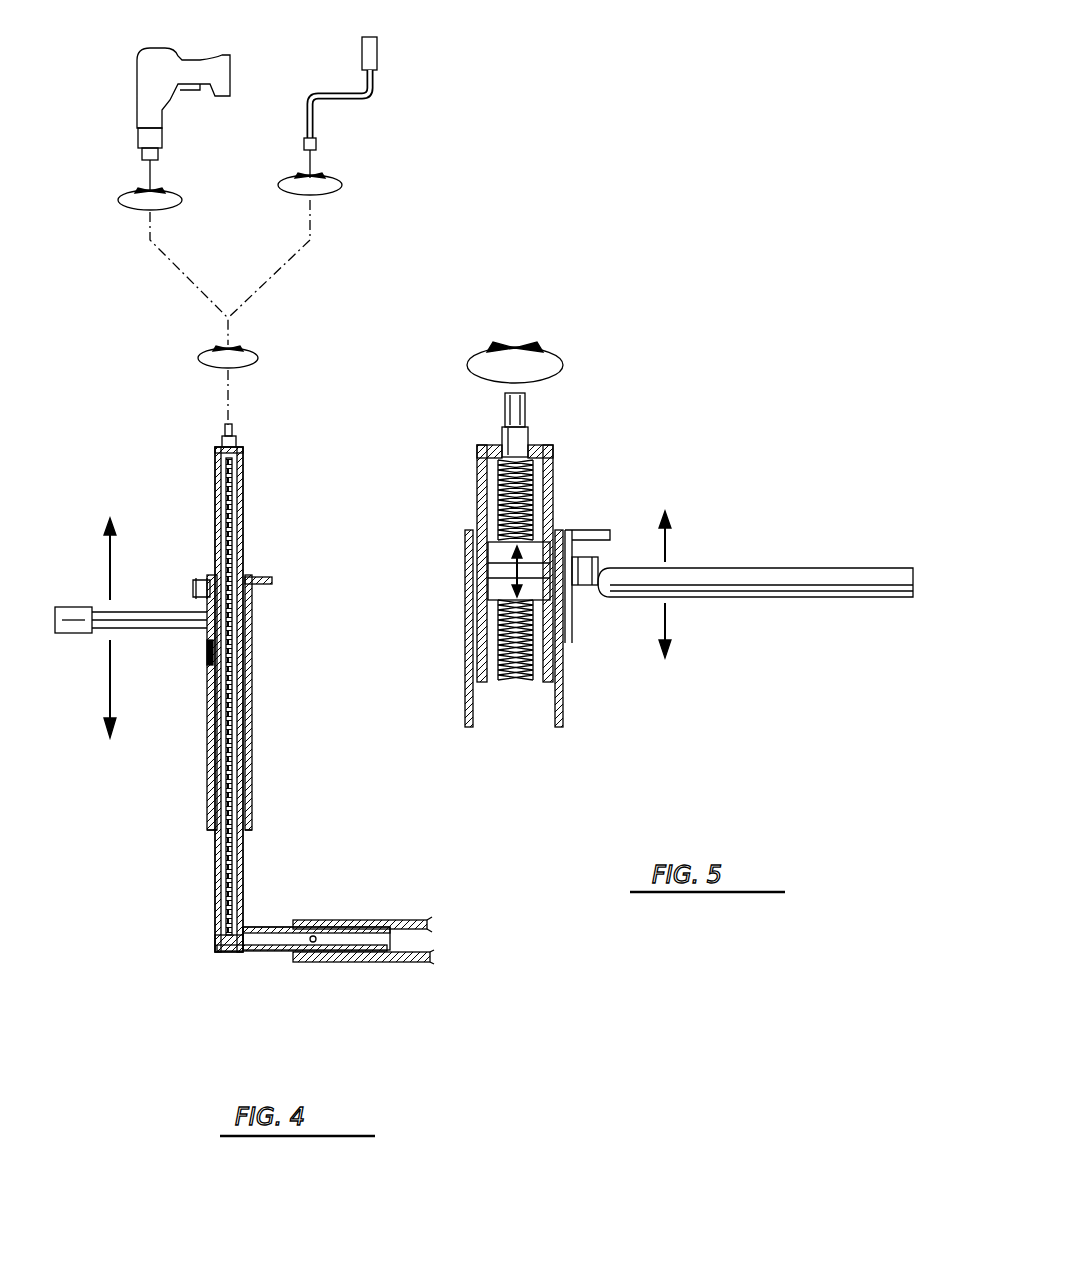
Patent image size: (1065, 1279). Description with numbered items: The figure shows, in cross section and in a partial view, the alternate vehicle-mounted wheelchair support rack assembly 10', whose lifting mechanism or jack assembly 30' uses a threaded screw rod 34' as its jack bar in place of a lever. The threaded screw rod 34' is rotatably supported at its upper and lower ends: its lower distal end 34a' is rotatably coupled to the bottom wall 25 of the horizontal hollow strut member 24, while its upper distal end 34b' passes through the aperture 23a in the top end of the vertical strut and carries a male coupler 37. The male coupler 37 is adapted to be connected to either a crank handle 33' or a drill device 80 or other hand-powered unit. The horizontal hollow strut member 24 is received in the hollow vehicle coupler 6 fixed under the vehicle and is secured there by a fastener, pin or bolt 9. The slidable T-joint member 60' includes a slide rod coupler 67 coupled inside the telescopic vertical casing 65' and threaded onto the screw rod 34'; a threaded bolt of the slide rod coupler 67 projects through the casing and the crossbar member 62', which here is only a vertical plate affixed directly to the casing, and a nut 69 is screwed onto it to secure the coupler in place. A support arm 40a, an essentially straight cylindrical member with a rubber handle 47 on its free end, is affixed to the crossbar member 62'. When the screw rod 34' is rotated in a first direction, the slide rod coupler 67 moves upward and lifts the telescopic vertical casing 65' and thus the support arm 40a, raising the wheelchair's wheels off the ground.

In FIG. 4, the drill device 80 is at (160, 55).
In FIG. 4, the crank handle 33' is at (385, 115).
In FIG. 4, the vehicle-mounted wheelchair support rack assembly 10' is at (193, 368).
In FIG. 4, the male coupler 37 is at (233, 425).
In FIG. 5, the male coupler 37 is at (527, 412).
In FIG. 4, the upper distal end 34b' is at (287, 422).
In FIG. 5, the upper distal end 34b' is at (479, 420).
In FIG. 4, the lifting mechanism or jack assembly 30' is at (276, 699).
In FIG. 4, the threaded screw rod 34' is at (284, 696).
In FIG. 5, the threaded screw rod 34' is at (576, 570).
In FIG. 5, the aperture 23a is at (540, 453).
In FIG. 4, the crossbar member 62' is at (206, 702).
In FIG. 5, the crossbar member 62' is at (541, 570).
In FIG. 4, the telescopic vertical casing 65' is at (276, 778).
In FIG. 5, the telescopic vertical casing 65' is at (549, 661).
In FIG. 4, the nut 69 is at (200, 585).
In FIG. 5, the nut 69 is at (590, 562).
In FIG. 4, the slidable T-joint member 60' is at (152, 546).
In FIG. 4, the slide rod coupler 67 is at (246, 585).
In FIG. 5, the slide rod coupler 67 is at (490, 585).
In FIG. 4, the support arm 40a is at (98, 540).
In FIG. 5, the support arm 40a is at (725, 568).
In FIG. 4, the rubber handle 47 is at (72, 632).
In FIG. 4, the horizontal hollow strut member 24 is at (275, 955).
In FIG. 4, the bottom wall 25 is at (240, 955).
In FIG. 4, the lower distal end 34a' is at (190, 979).
In FIG. 4, the fastener, pin or bolt 9 is at (315, 935).
In FIG. 4, the vehicle coupler 6 is at (398, 965).